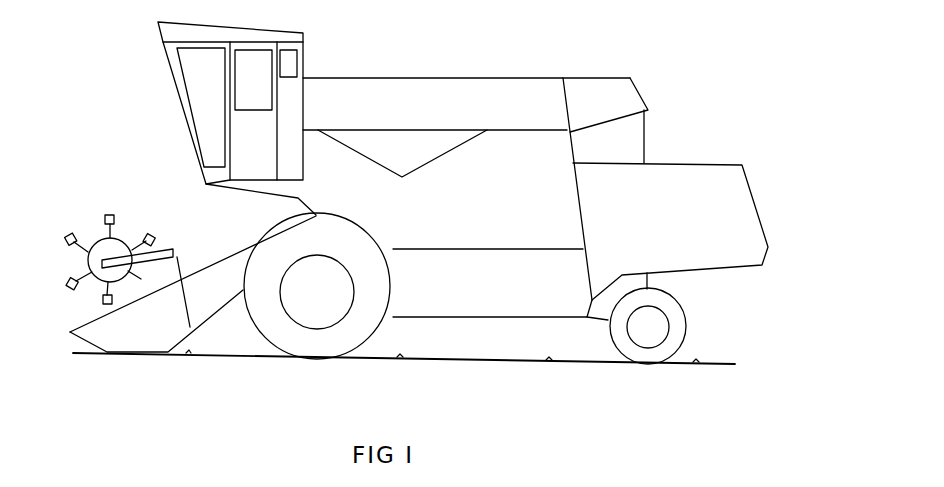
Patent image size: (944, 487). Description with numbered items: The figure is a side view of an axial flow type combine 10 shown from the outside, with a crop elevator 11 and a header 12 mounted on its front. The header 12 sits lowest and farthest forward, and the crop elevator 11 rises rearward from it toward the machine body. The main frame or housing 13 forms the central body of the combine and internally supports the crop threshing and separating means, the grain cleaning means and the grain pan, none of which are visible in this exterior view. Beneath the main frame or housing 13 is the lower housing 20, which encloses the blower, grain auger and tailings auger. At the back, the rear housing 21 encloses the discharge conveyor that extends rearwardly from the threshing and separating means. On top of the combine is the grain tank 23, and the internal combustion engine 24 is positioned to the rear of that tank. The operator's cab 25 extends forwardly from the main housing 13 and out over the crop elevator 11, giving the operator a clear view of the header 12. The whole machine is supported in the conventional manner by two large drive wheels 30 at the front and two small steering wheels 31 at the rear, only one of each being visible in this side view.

The combine 10 is at (145, 131).
The crop elevator 11 is at (226, 253).
The header 12 is at (82, 310).
The main frame or housing 13 is at (497, 192).
The lower housing 20 is at (510, 305).
The rear housing 21 is at (740, 173).
The grain tank 23 is at (405, 137).
The internal combustion engine 24 is at (627, 138).
The operator's cab 25 is at (177, 43).
The drive wheels 30 is at (363, 343).
The steering wheels 31 is at (675, 342).